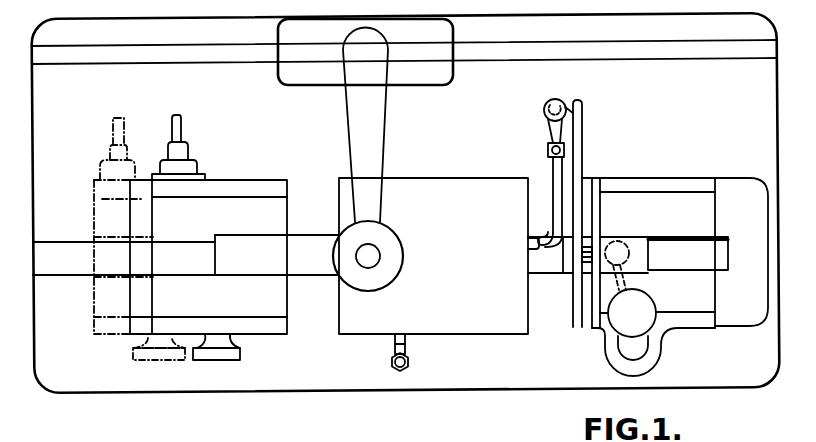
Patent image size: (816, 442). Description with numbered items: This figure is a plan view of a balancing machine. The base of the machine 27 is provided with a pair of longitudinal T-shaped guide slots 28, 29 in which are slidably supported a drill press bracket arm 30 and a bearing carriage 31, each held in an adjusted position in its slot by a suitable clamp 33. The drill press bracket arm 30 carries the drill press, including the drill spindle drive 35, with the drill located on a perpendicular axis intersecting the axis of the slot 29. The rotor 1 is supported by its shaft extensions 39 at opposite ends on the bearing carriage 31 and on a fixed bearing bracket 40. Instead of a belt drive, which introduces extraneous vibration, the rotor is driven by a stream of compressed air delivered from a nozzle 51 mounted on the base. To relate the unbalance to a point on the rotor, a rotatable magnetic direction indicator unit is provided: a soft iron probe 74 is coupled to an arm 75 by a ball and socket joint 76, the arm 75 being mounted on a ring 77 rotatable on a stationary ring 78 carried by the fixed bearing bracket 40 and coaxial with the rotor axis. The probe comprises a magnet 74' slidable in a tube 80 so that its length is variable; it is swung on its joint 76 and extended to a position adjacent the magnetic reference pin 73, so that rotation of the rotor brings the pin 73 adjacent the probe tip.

The rotor 1 is at (510, 328).
The base of the machine 27 is at (744, 376).
The T-shaped guide slot 28 is at (247, 53).
The T-shaped guide slot 29 is at (64, 250).
The drill press bracket arm 30 is at (375, 135).
The bearing carriage 31 is at (215, 182).
The clamp 33 is at (234, 352).
The drill spindle drive 35 is at (403, 268).
The shaft extensions 39 is at (325, 266).
The fixed bearing bracket 40 is at (703, 305).
The nozzle 51 is at (412, 351).
The reference pin 73 is at (528, 253).
The soft iron probe 74 is at (535, 114).
The magnet 74' is at (534, 195).
The arm 75 is at (582, 127).
The ball and socket joint 76 is at (556, 99).
The ring 77 is at (588, 187).
The stationary ring 78 is at (600, 217).
The tube 80 is at (548, 118).